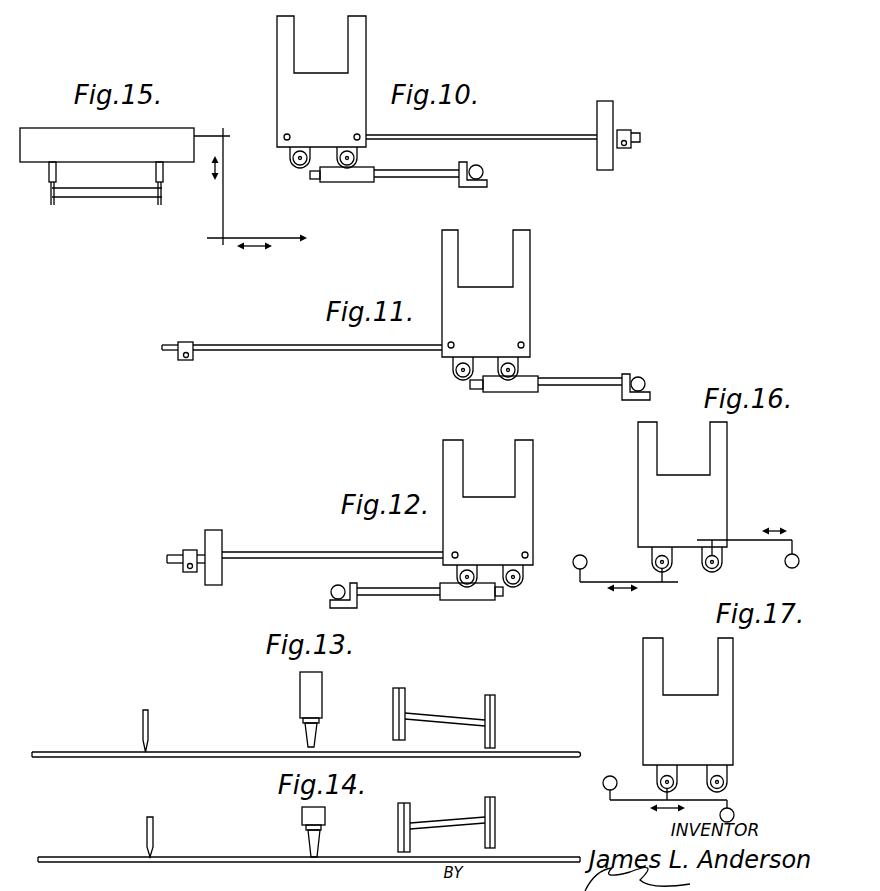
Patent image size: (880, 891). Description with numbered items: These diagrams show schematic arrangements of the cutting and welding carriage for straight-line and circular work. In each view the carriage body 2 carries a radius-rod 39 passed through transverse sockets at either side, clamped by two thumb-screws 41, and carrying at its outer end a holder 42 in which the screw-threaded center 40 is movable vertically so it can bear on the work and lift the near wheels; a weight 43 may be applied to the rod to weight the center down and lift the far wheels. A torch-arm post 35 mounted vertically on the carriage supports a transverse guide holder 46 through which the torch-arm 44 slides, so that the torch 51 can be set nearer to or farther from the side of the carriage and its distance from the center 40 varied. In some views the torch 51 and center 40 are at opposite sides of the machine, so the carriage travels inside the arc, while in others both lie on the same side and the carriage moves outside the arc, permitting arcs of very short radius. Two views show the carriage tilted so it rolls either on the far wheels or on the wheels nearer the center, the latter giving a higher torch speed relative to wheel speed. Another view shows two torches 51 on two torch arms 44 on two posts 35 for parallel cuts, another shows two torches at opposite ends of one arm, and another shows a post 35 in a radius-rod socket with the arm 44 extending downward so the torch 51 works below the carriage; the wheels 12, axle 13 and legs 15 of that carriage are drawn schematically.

In FIG. 15, the body 2 is at (107, 145).
In FIG. 10, the body 2 is at (283, 80).
In FIG. 11, the body 2 is at (486, 293).
In FIG. 12, the body 2 is at (488, 502).
In FIG. 16, the body 2 is at (682, 484).
In FIG. 17, the body 2 is at (688, 701).
In FIG. 15, the wheels 12 is at (156, 172).
In FIG. 13, the wheels 12 is at (404, 690).
In FIG. 14, the wheels 12 is at (485, 797).
In FIG. 13, the axle 13 is at (439, 716).
In FIG. 14, the axle 13 is at (441, 820).
In FIG. 15, the frame rails 15 is at (50, 207).
In FIG. 15, the torch-arm post 35 is at (207, 130).
In FIG. 10, the torch-arm post 35 is at (356, 158).
In FIG. 11, the torch-arm post 35 is at (519, 369).
In FIG. 12, the torch-arm post 35 is at (465, 601).
In FIG. 16, the torch-arm post 35 is at (672, 567).
In FIG. 17, the torch-arm post 35 is at (672, 781).
In FIG. 10, the radius-rod 39 is at (535, 135).
In FIG. 11, the radius-rod 39 is at (310, 352).
In FIG. 12, the radius-rod 39 is at (320, 552).
In FIG. 10, the center 40 is at (627, 147).
In FIG. 11, the center 40 is at (186, 361).
In FIG. 12, the center 40 is at (190, 571).
In FIG. 13, the center 40 is at (142, 728).
In FIG. 14, the center 40 is at (146, 832).
In FIG. 10, the thumb-screws 41 is at (290, 134).
In FIG. 11, the thumb-screws 41 is at (454, 343).
In FIG. 12, the thumb-screws 41 is at (458, 553).
In FIG. 10, the holder 42 is at (628, 131).
In FIG. 11, the holder 42 is at (186, 342).
In FIG. 12, the holder 42 is at (187, 550).
In FIG. 10, the weight 43 is at (605, 102).
In FIG. 12, the weight 43 is at (221, 535).
In FIG. 15, the torch-arm 44 is at (225, 192).
In FIG. 11, the torch-arm 44 is at (575, 388).
In FIG. 12, the torch-arm 44 is at (395, 597).
In FIG. 16, the torch-arm 44 is at (590, 585).
In FIG. 17, the torch-arm 44 is at (633, 803).
In FIG. 10, the guide holder 46 is at (345, 183).
In FIG. 11, the guide holder 46 is at (506, 392).
In FIG. 12, the guide holder 46 is at (485, 600).
In FIG. 15, the torch 51 is at (268, 236).
In FIG. 10, the torch 51 is at (487, 170).
In FIG. 11, the torch 51 is at (643, 378).
In FIG. 12, the torch 51 is at (330, 591).
In FIG. 16, the torch 51 is at (582, 554).
In FIG. 17, the torch 51 is at (603, 783).
In FIG. 13, the torch 51 is at (323, 693).
In FIG. 14, the torch 51 is at (326, 813).